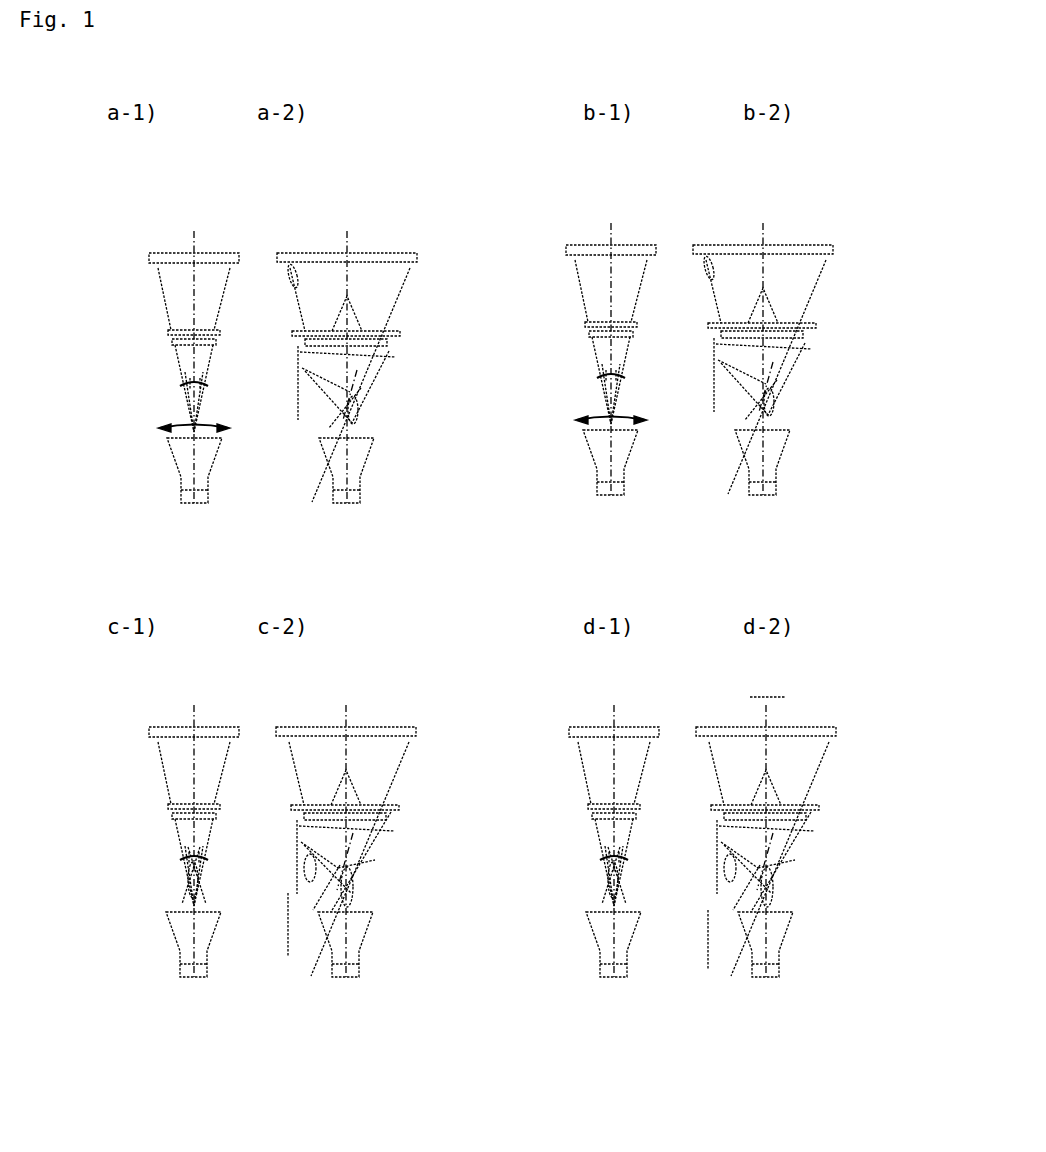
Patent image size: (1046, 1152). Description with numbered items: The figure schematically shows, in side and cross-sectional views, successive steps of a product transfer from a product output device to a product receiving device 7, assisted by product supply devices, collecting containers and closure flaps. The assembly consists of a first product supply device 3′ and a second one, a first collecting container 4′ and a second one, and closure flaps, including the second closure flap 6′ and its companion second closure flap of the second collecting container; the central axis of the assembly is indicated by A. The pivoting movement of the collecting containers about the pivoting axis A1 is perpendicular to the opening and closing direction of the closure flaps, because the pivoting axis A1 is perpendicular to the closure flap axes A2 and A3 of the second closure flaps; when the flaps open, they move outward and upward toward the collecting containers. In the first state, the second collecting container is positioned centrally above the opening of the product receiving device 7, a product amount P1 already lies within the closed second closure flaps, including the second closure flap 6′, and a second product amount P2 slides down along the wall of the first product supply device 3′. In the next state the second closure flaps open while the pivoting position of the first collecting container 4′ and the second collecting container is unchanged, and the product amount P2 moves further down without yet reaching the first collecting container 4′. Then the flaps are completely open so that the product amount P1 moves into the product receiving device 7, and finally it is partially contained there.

The central axis A is at (614, 714).
The first product supply device 3′ is at (307, 303).
The first collecting container 4′ is at (300, 360).
The second closure flap 6′ is at (183, 410).
The product receiving device 7 is at (182, 484).
The pivoting axis A1 is at (340, 350).
The closure flap axis A2 is at (183, 386).
The closure flap axis A3 is at (205, 386).
The product amount P1 is at (355, 423).
The second product amount P2 is at (290, 268).